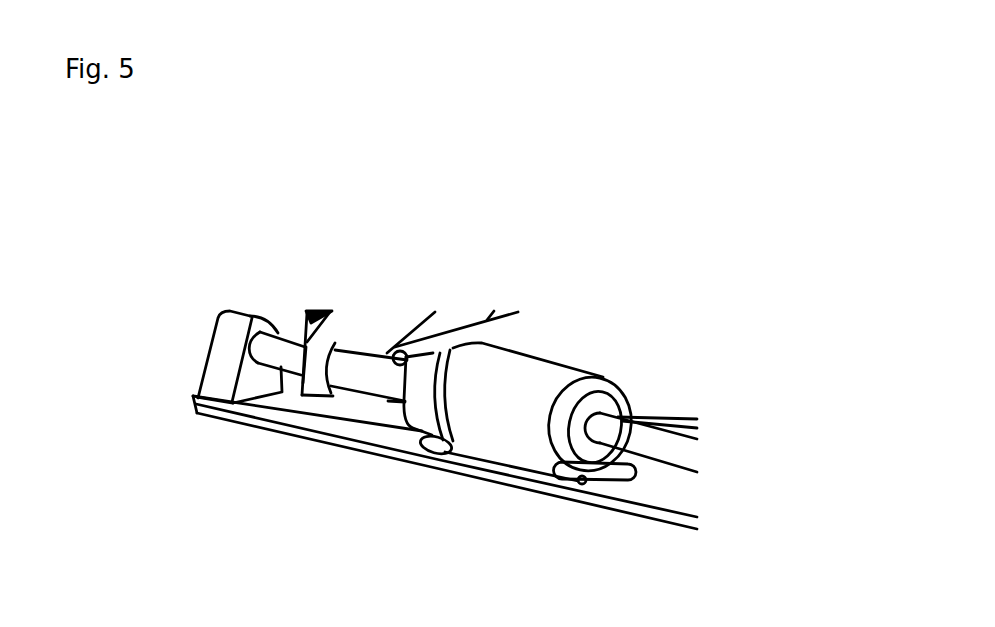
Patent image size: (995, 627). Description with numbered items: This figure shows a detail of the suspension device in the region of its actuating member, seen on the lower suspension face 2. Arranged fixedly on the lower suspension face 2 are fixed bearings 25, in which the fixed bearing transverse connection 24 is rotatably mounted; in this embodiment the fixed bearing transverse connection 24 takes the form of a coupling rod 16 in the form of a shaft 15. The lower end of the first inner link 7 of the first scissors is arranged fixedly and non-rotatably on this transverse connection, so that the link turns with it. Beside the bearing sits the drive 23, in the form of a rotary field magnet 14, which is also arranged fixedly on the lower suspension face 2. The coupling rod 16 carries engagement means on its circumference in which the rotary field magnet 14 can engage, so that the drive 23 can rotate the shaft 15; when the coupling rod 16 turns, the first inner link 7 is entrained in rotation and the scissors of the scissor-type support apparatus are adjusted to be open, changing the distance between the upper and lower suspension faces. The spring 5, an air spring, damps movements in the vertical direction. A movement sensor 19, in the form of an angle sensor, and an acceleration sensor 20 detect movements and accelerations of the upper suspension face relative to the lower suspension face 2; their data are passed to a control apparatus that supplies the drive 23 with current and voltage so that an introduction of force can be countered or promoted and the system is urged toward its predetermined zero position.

The lower suspension face 2 is at (380, 453).
The spring 5 is at (542, 417).
The first inner link 7 is at (330, 312).
The rotary field magnet 14 is at (498, 410).
The shaft 15 is at (233, 397).
The coupling rod 16 is at (363, 373).
The movement sensor 19 is at (395, 392).
The acceleration sensor 20 is at (310, 312).
The drive 23 is at (542, 459).
The fixed bearing transverse connection 24 is at (233, 397).
The fixed bearings 25 is at (223, 362).